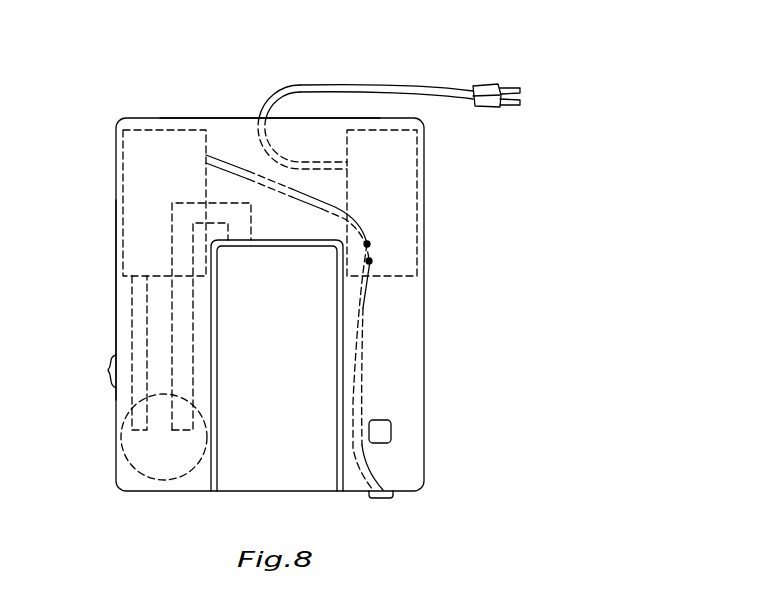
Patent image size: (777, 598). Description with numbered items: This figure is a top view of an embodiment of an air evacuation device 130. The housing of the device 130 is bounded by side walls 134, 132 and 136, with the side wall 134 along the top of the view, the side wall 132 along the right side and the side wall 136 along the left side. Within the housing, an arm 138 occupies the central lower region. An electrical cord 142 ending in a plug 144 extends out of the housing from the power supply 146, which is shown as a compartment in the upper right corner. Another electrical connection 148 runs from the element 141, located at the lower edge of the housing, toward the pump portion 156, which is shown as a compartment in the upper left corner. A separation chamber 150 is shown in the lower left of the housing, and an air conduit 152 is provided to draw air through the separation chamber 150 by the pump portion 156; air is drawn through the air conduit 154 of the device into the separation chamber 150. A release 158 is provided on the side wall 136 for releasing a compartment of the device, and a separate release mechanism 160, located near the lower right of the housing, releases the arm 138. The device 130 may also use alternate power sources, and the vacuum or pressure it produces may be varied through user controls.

The air evacuation device 130 is at (392, 40).
The side wall 132 is at (424, 306).
The side wall 134 is at (168, 118).
The side wall 136 is at (116, 292).
The arm 138 is at (270, 480).
The electrical connection terminal 141 is at (383, 498).
The electrical cord 142 is at (280, 90).
The plug 144 is at (500, 86).
The power supply 146 is at (400, 194).
The electrical connection 148 is at (360, 357).
The separation chamber 150 is at (133, 471).
The air conduit 152 is at (132, 332).
The air conduit 154 is at (193, 316).
The pump portion 156 is at (133, 178).
The release 158 is at (110, 364).
The release mechanism 160 is at (391, 430).